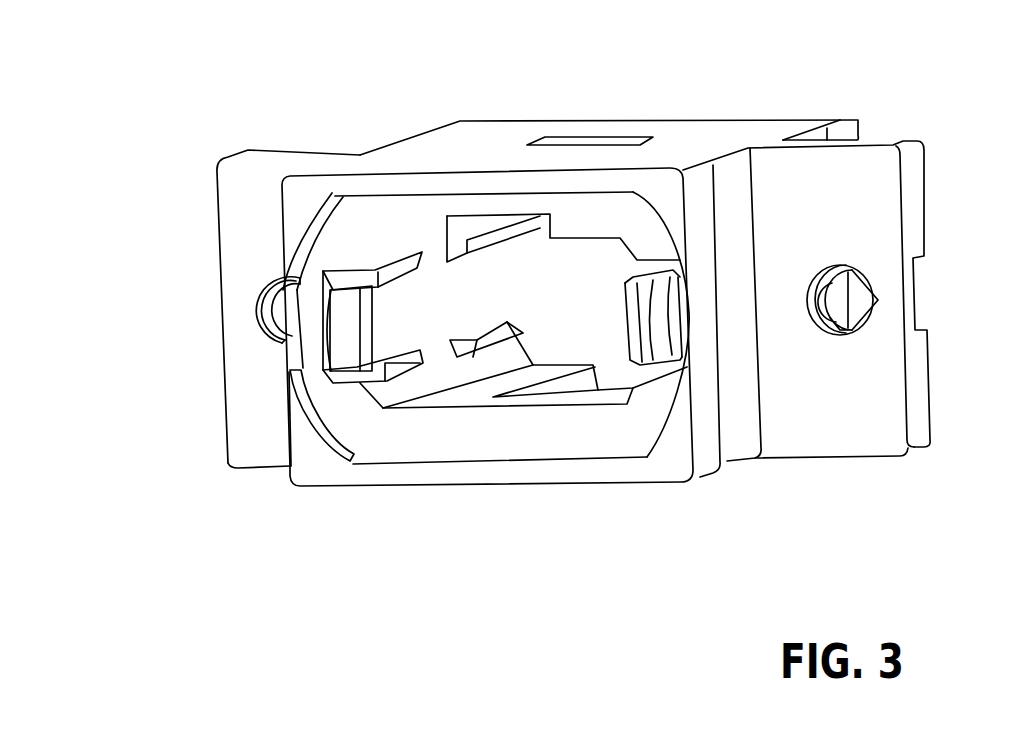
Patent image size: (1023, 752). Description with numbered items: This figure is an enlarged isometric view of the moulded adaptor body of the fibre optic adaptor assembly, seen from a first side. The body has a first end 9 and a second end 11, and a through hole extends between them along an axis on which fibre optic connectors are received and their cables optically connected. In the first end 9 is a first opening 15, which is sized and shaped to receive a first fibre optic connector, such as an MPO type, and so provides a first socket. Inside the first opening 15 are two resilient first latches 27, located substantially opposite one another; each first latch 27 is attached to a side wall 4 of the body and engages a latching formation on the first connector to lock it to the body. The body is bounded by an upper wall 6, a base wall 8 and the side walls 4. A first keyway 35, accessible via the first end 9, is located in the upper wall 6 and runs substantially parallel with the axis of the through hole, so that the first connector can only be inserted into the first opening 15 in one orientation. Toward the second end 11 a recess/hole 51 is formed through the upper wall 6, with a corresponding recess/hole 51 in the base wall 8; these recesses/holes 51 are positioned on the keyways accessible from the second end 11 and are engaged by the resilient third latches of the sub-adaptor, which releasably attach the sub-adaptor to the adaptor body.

The side wall 4 is at (292, 408).
The upper wall 6 is at (440, 148).
The base wall 8 is at (445, 483).
The first end 9 is at (552, 482).
The second end 11 is at (727, 120).
The first opening 15 is at (433, 385).
The first latch 27 is at (340, 328).
The first keyway 35 is at (448, 223).
The recess/hole 51 is at (588, 143).